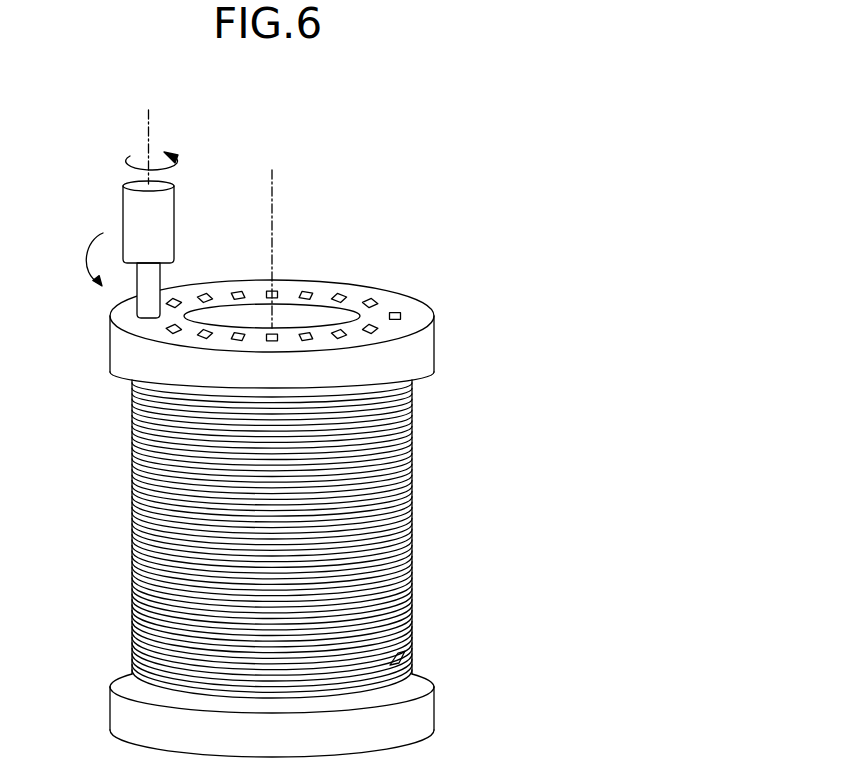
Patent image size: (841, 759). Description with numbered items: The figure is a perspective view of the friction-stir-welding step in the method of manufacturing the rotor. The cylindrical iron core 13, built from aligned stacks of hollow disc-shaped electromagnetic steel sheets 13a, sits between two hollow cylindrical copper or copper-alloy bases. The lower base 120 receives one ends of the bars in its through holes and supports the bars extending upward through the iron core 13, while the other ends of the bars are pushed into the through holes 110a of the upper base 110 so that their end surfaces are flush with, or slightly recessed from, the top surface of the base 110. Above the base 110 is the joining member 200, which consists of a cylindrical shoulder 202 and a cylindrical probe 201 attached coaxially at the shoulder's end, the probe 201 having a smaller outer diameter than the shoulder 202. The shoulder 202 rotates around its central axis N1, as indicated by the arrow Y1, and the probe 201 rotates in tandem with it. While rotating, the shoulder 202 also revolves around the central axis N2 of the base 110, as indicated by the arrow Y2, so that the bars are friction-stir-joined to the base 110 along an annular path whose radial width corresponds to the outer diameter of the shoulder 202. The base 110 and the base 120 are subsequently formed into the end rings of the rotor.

The iron core 13 is at (307, 539).
The electromagnetic steel sheet 13a is at (413, 645).
The base 110 is at (305, 310).
The through hole 110a is at (368, 300).
The base 120 is at (437, 708).
The joining member 200 is at (144, 251).
The probe 201 is at (137, 283).
The shoulder 202 is at (175, 222).
The central axis N1 is at (151, 121).
The central axis N2 is at (274, 197).
The arrow Y1 is at (130, 156).
The arrow Y2 is at (85, 255).